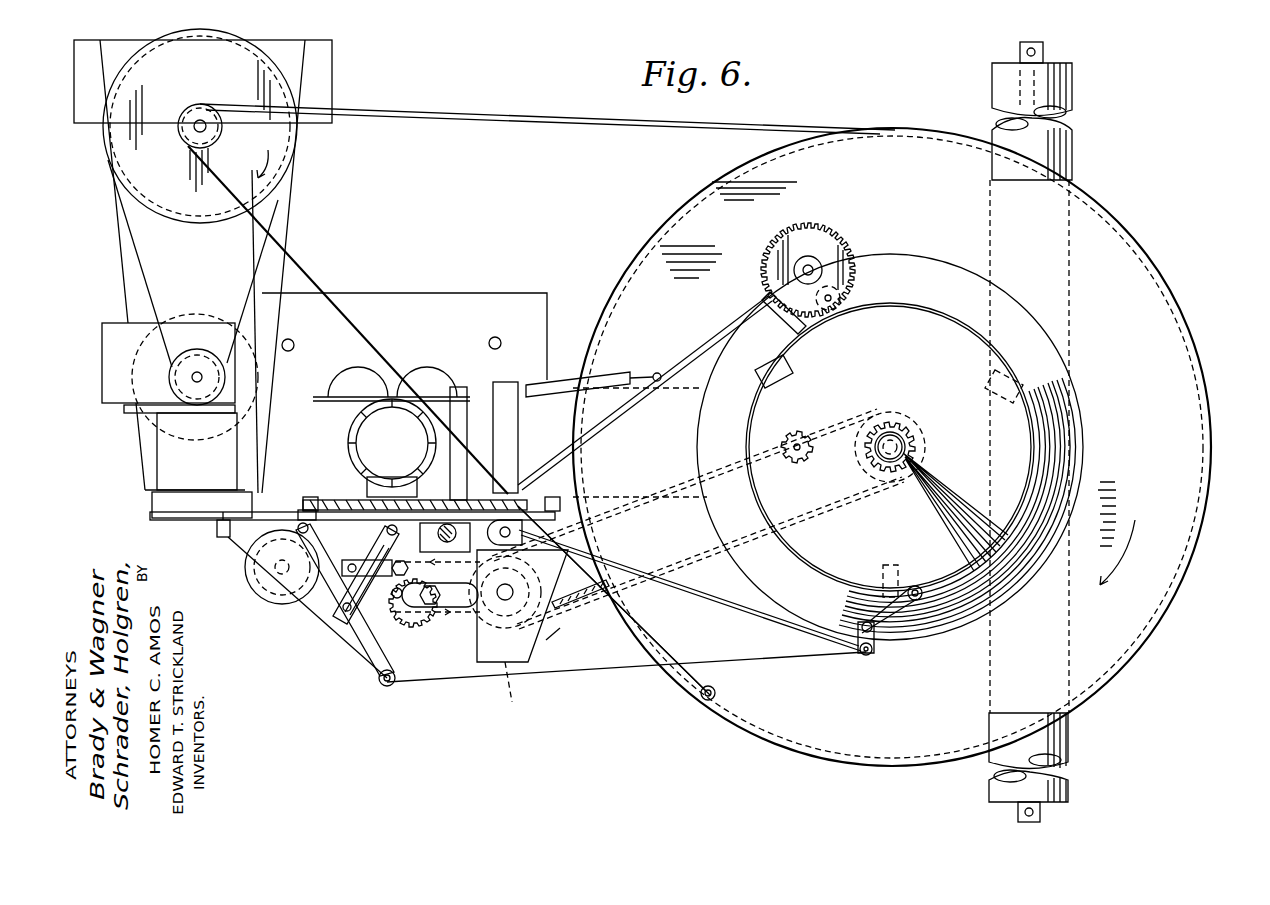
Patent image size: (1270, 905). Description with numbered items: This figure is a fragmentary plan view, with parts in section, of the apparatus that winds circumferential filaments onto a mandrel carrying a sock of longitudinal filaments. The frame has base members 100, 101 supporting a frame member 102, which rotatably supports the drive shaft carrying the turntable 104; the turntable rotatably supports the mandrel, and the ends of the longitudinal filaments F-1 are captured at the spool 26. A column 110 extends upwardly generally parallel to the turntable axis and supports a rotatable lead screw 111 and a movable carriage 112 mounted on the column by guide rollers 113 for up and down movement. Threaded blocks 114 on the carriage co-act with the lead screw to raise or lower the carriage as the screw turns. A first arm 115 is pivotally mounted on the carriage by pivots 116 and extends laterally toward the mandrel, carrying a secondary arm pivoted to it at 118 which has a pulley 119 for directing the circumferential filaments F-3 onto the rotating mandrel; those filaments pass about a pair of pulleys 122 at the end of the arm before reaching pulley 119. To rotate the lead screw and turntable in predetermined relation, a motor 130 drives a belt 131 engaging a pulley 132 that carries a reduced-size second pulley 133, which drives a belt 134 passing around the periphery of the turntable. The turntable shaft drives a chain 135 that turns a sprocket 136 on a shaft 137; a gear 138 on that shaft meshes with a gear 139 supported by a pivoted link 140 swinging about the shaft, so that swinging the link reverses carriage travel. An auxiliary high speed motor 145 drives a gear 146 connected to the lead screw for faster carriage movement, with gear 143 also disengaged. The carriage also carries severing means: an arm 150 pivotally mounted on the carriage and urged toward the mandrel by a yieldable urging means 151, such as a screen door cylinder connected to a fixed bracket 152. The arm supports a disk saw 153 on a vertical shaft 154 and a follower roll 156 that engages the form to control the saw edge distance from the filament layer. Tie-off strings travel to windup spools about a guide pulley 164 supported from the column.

The spool 26 is at (908, 448).
The base member 100 is at (536, 655).
The base member 101 is at (1070, 152).
The frame member 102 is at (479, 402).
The turntable 104 is at (1142, 265).
The column 110 is at (348, 423).
The lead screw 111 is at (438, 535).
The carriage 112 is at (302, 513).
The guide rollers 113 is at (308, 498).
The threaded blocks 114 is at (522, 580).
The first arm 115 is at (702, 600).
The pivots 116 is at (525, 530).
The pivot 118 is at (861, 623).
The pulley 119 is at (915, 585).
The pulleys 122 is at (866, 656).
The motor 130 is at (256, 372).
The belt 131 is at (290, 194).
The pulley 132 is at (295, 92).
The second pulley 133 is at (221, 137).
The belt 134 is at (640, 127).
The chain 135 is at (820, 504).
The sprocket 136 is at (554, 636).
The shaft 137 is at (562, 606).
The gear 138 is at (526, 686).
The gear 139 is at (445, 633).
The pivoted link 140 is at (436, 608).
The gear 143 is at (384, 592).
The auxiliary high speed motor 145 is at (270, 598).
The gear 146 is at (345, 630).
The arm 150 is at (622, 412).
The yieldable urging means 151 is at (607, 376).
The fixed bracket 152 is at (518, 430).
The disk saw 153 is at (801, 233).
The vertical shaft 154 is at (817, 264).
The follower roll 156 is at (841, 299).
The guide pulley 164 is at (705, 701).
The filament F-1 is at (975, 500).
The filament F-3 is at (1008, 572).